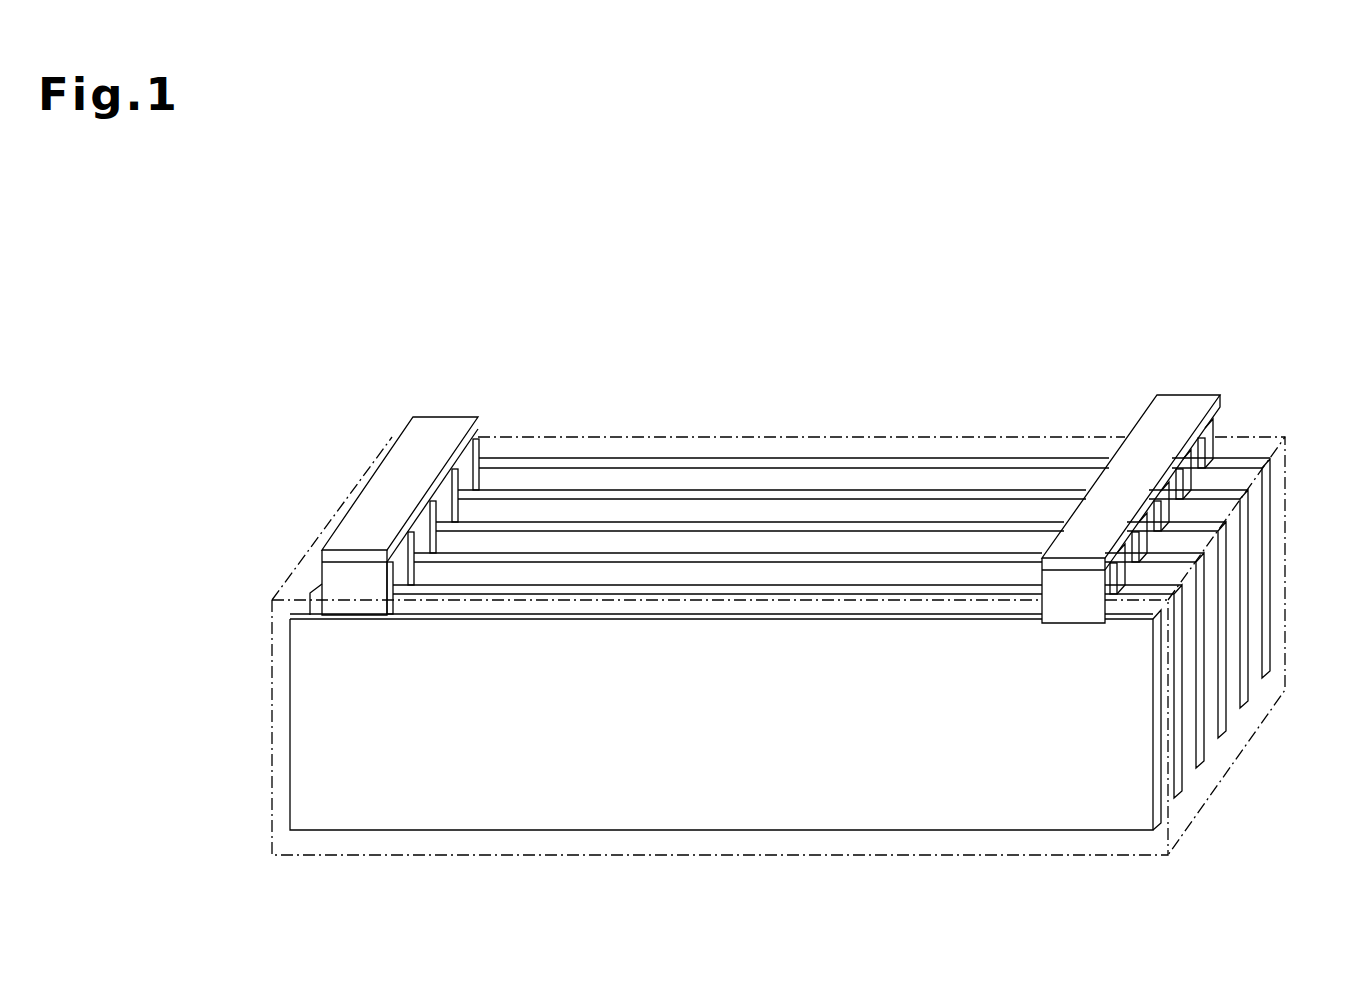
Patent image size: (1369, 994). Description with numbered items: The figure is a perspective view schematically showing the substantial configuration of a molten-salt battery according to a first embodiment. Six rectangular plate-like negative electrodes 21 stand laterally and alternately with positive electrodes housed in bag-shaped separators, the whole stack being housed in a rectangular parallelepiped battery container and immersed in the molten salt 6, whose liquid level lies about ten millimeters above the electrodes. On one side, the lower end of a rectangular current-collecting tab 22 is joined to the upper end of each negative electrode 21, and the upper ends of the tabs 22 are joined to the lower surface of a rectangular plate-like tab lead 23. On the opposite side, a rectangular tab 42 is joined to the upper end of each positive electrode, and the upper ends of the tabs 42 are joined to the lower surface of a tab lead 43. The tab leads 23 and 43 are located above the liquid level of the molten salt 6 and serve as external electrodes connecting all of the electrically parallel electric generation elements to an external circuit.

The molten salt 6 is at (625, 426).
The negative electrode 21 is at (820, 617).
The tab 22 is at (1110, 610).
The tab lead 23 is at (1182, 400).
The tab 42 is at (390, 570).
The tab lead 43 is at (435, 433).